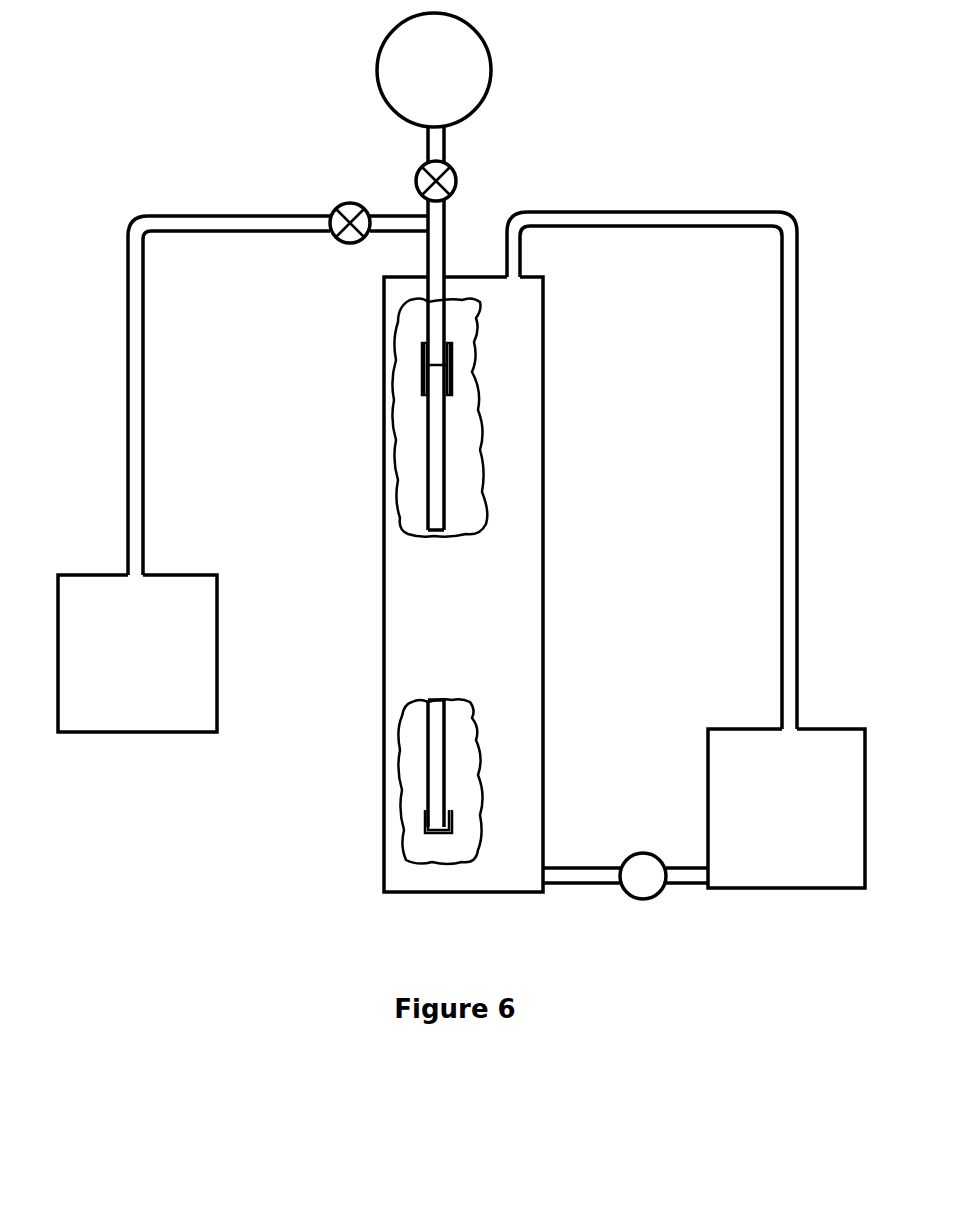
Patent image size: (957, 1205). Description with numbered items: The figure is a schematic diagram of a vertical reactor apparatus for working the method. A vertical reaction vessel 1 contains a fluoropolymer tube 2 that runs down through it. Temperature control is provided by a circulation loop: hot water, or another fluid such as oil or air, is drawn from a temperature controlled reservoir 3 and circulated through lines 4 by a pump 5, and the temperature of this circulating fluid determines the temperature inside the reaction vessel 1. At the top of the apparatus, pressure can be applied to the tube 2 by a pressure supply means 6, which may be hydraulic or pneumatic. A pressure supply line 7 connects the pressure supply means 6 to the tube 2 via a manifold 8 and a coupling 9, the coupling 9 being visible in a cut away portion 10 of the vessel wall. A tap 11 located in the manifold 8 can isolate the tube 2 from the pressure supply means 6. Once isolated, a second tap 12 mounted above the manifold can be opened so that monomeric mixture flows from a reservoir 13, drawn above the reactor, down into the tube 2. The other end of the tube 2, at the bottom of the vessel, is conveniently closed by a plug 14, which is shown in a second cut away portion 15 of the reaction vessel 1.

The vertical reaction vessel 1 is at (463, 584).
The fluoropolymer tube 2 is at (447, 448).
The temperature controlled reservoir 3 is at (786, 808).
The lines 4 is at (798, 584).
The pump 5 is at (625, 876).
The pressure supply means 6 is at (137, 653).
The pressure supply line 7 is at (144, 420).
The manifold 8 is at (398, 214).
The coupling 9 is at (420, 378).
The cut away portion 10 is at (490, 524).
The tap 11 is at (334, 208).
The tap 12 is at (458, 175).
The reservoir 13 is at (434, 70).
The plug 14 is at (426, 833).
The cut away portion 15 is at (402, 742).